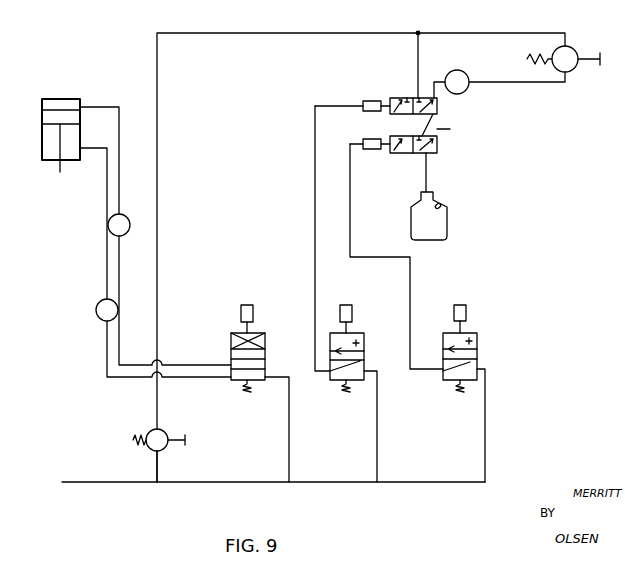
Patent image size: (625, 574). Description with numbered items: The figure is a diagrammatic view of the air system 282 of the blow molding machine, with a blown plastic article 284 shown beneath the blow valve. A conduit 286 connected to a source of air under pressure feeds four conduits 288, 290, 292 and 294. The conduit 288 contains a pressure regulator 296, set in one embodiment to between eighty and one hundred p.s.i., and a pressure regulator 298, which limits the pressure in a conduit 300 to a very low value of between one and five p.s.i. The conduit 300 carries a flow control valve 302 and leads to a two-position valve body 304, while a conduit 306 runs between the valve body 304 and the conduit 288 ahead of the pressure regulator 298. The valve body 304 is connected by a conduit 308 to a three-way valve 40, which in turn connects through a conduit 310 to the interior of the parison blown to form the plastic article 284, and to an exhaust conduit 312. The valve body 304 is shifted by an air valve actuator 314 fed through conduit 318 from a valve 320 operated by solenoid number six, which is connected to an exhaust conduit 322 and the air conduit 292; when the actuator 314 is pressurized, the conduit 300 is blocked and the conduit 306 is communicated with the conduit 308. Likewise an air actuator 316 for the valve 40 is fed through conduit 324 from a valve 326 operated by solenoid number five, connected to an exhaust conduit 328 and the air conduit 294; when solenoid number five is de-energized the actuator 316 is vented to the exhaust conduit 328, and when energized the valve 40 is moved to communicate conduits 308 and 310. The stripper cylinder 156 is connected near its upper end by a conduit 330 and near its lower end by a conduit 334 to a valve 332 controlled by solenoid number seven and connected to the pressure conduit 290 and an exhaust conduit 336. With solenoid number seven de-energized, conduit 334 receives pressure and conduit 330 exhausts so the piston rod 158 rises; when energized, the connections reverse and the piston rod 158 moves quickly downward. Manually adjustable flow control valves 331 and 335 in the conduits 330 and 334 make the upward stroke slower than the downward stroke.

The three-way valve 40 is at (438, 147).
The cylinder 156 is at (89, 99).
The piston rod 158 is at (60, 172).
The air system 282 is at (548, 210).
The plastic article 284 is at (437, 197).
The conduit 286 is at (236, 485).
The conduit 288 is at (159, 470).
The conduit 290 is at (291, 458).
The conduit 292 is at (379, 452).
The conduit 294 is at (487, 441).
The pressure regulator 296 is at (167, 435).
The pressure regulator 298 is at (578, 68).
The conduit 300 is at (513, 83).
The flow control valve 302 is at (459, 72).
The two-position valve body 304 is at (440, 109).
The conduit 306 is at (418, 59).
The conduit 308 is at (424, 122).
The conduit 310 is at (428, 173).
The exhaust conduit 312 is at (452, 130).
The valve actuator 314 is at (370, 100).
The air actuator 316 is at (371, 150).
The conduit 318 is at (312, 214).
The valve 320 is at (365, 352).
The exhaust conduit 322 is at (366, 371).
The conduit 324 is at (351, 241).
The valve 326 is at (478, 337).
The exhaust conduit 328 is at (465, 369).
The conduit 330 is at (120, 179).
The flow control valve 331 is at (123, 215).
The valve 332 is at (266, 351).
The conduit 334 is at (108, 271).
The flow control valve 335 is at (96, 318).
The exhaust conduit 336 is at (266, 372).